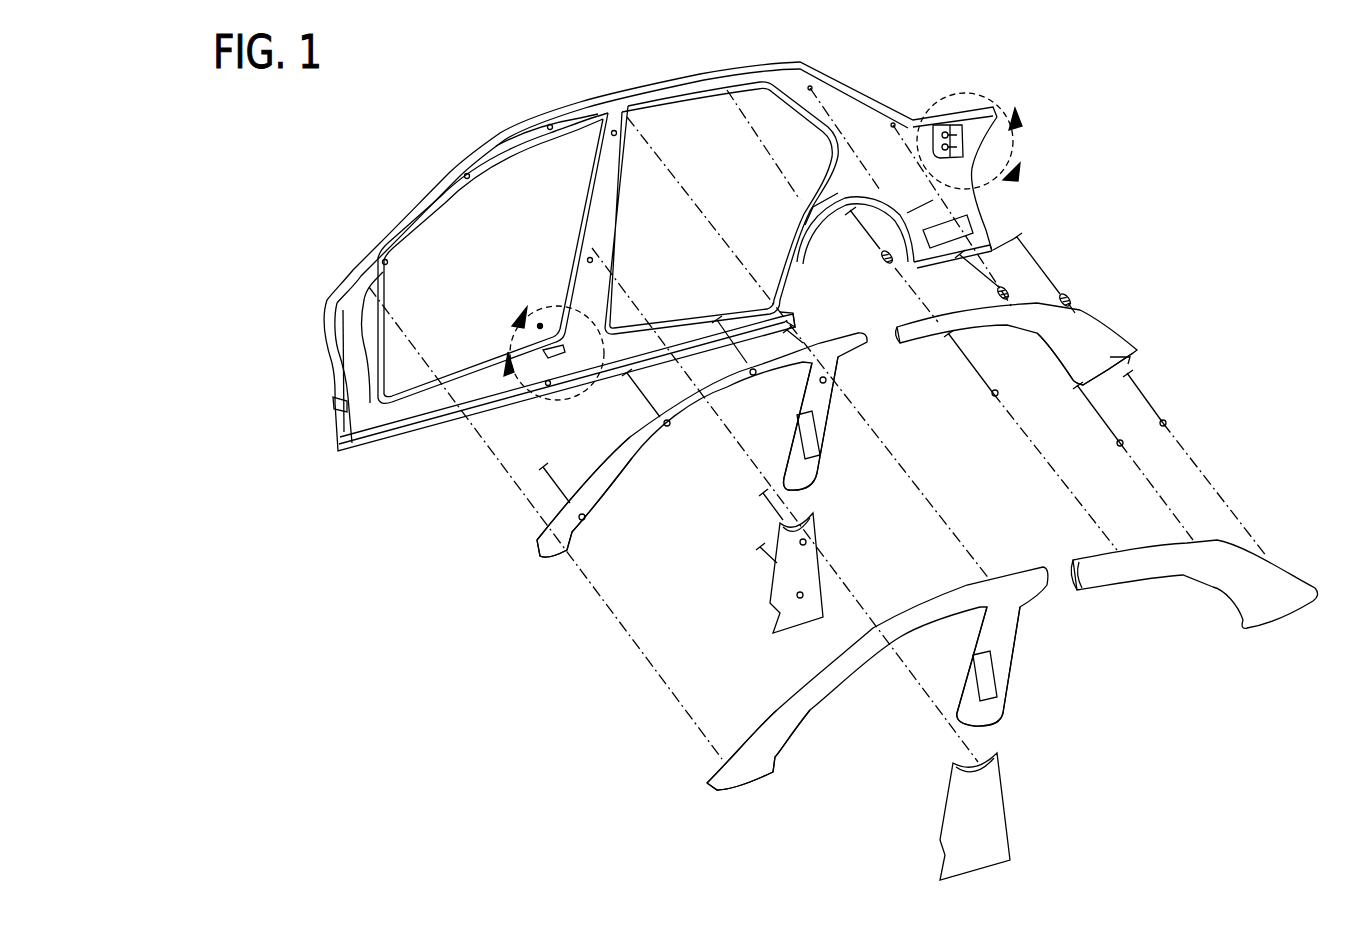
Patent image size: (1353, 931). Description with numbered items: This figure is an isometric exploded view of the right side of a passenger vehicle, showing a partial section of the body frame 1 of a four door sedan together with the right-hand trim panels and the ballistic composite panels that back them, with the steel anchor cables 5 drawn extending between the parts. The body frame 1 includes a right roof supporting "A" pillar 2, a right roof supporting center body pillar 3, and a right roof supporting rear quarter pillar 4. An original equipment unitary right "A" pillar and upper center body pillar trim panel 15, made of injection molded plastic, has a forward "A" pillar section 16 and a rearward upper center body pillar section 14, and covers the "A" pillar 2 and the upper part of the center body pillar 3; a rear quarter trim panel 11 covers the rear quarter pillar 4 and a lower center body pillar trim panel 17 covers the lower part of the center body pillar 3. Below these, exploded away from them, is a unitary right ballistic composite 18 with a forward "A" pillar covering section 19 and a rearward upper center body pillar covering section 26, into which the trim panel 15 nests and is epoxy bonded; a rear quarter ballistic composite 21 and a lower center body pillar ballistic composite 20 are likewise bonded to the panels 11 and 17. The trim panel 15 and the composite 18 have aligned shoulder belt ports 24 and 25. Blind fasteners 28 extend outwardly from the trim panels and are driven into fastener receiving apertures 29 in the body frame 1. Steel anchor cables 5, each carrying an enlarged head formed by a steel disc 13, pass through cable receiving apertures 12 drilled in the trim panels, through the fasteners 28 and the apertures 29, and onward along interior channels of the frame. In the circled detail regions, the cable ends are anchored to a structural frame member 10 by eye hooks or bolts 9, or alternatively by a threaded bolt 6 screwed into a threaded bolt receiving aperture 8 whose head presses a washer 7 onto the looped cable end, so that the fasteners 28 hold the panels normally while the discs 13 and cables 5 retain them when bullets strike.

The body frame 1 is at (518, 115).
The right roof supporting "A" pillar 2 is at (424, 205).
The right roof supporting center body pillar 3 is at (597, 188).
The right roof supporting rear quarter pillar 4 is at (845, 105).
The steel anchor cable 5 is at (942, 126).
The threaded bolt 6 is at (540, 325).
The washer 7 is at (545, 337).
The threaded bolt receiving aperture 8 is at (548, 386).
The eye hook or bolt 9 is at (952, 127).
The structural frame member 10 is at (950, 157).
The OEM right rear quarter trim panel 11 is at (1045, 334).
The steel anchor cable receiving aperture 12 is at (1108, 357).
The steel disc 13 is at (1170, 420).
The rearward upper center body pillar section 14 is at (837, 423).
The unitary right "A" pillar and upper center body pillar trim panel 15 is at (713, 445).
The forward "A" pillar section 16 is at (600, 488).
The OEM right lower center body pillar trim panel 17 is at (783, 595).
The unitary right "A" pillar and upper center body pillar ballistic composite 18 is at (903, 678).
The forward "A" pillar covering section 19 is at (775, 727).
The right lower center body pillar ballistic composite 20 is at (978, 800).
The right rear quarter ballistic composite 21 is at (1218, 572).
The shoulder belt port 24 is at (812, 445).
The shoulder belt port 25 is at (985, 682).
The rearward upper center body pillar covering section 26 is at (1028, 667).
The blind fastener 28 is at (1075, 295).
The fastener receiving aperture 29 is at (727, 87).